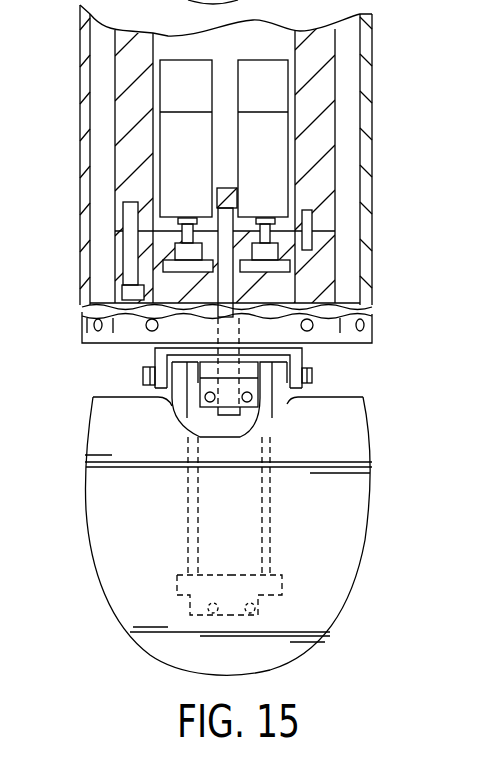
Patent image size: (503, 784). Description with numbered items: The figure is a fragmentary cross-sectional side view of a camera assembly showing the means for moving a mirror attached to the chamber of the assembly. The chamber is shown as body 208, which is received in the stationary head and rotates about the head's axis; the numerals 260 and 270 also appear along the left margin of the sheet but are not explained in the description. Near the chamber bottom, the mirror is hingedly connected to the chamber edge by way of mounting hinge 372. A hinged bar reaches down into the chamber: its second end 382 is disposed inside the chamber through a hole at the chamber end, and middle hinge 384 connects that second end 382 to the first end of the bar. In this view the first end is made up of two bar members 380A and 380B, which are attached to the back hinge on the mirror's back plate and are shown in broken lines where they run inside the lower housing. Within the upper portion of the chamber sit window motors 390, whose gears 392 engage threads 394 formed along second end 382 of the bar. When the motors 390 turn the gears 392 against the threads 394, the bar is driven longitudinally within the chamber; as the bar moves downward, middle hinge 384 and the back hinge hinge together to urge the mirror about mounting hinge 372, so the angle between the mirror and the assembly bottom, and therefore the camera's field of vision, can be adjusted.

The housing section 260 is at (20, 25).
The housing wall 270 is at (10, 48).
The body 208 is at (0, 186).
The window motors 390 is at (265, 60).
The gears 392 is at (177, 246).
The threads 394 is at (235, 250).
The mounting hinge 372 is at (142, 375).
The second end 382 is at (312, 374).
The middle hinge 384 is at (277, 399).
The bar member 380A is at (186, 498).
The bar member 380B is at (317, 518).